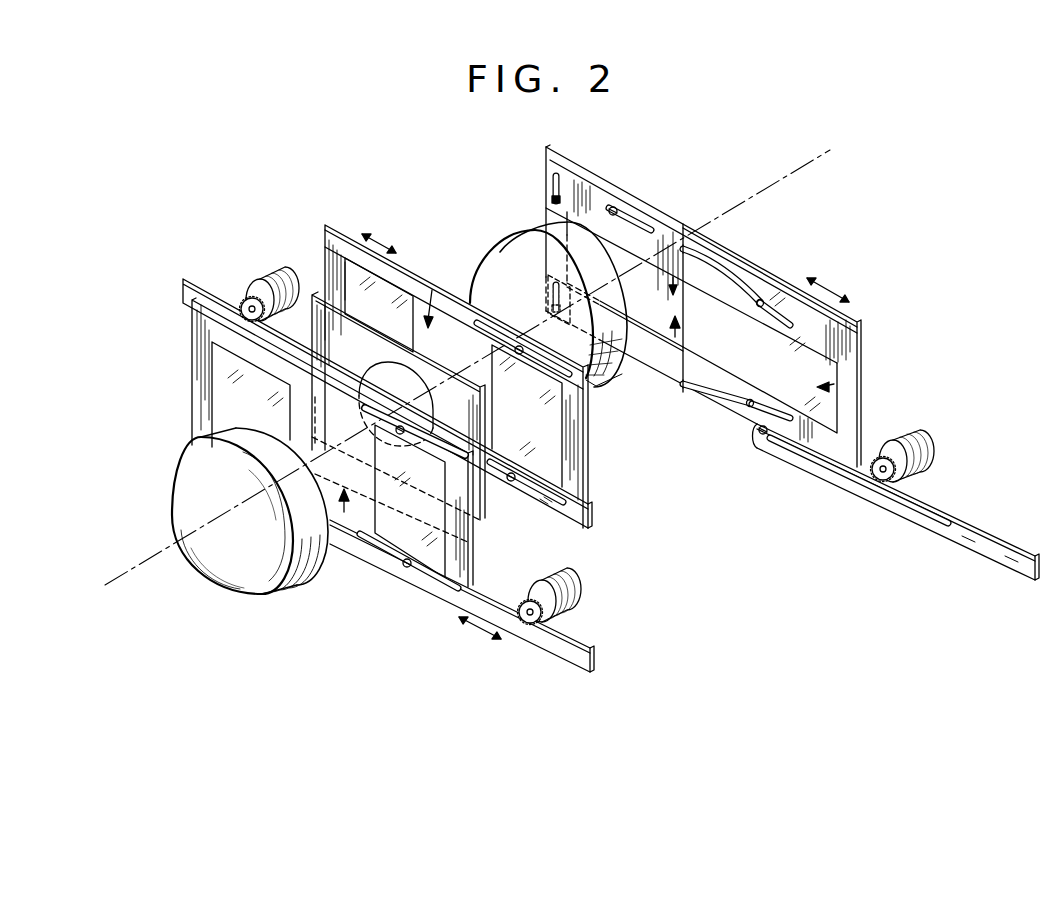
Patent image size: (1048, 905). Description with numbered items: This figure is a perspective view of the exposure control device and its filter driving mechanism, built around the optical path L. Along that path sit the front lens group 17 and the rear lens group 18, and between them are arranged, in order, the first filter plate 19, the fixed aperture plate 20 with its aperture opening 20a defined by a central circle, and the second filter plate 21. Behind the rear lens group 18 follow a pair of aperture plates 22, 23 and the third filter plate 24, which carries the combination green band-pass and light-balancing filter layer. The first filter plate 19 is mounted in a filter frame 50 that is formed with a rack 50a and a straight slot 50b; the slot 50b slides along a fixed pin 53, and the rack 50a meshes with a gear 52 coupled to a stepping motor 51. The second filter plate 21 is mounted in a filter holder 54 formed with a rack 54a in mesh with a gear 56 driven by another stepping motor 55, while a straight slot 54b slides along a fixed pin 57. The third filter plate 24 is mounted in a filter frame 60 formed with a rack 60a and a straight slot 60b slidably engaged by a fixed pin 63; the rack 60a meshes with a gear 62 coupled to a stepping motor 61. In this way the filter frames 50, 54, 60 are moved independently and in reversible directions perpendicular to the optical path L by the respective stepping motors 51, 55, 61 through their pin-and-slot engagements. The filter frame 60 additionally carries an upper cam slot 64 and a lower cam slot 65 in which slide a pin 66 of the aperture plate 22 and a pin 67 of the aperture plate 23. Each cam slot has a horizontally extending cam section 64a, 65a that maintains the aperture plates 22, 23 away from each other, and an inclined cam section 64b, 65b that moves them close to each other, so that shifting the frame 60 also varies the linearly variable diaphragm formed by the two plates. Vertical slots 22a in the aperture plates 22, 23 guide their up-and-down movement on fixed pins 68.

The front lens group 17 is at (232, 572).
The rear lens group 18 is at (498, 262).
The first filter plate 19 is at (344, 514).
The fixed aperture plate 20 is at (312, 294).
The aperture opening 20a is at (421, 408).
The second filter plate 21 is at (438, 290).
The aperture plate 22 is at (574, 168).
The vertical slot 22a is at (551, 178).
The aperture plate 23 is at (663, 362).
The third filter plate 24 is at (834, 384).
The filter frame 50 is at (193, 379).
The rack 50a is at (589, 646).
The straight slot 50b is at (440, 590).
The stepping motor 51 is at (567, 590).
The gear 52 is at (531, 625).
The fixed pin 53 is at (406, 568).
The filter holder 54 is at (590, 445).
The rack 54a is at (184, 278).
The straight slot 54b is at (545, 507).
The stepping motor 55 is at (270, 279).
The gear 56 is at (250, 298).
The fixed pin 57 is at (511, 482).
The filter frame 60 is at (850, 345).
The rack 60a is at (1015, 538).
The straight slot 60b is at (810, 455).
The stepping motor 61 is at (910, 440).
The gear 62 is at (882, 482).
The fixed pin 63 is at (761, 436).
The upper cam slot 64 is at (746, 281).
The horizontally extending cam section 64a is at (714, 256).
The inclined cam section 64b is at (768, 302).
The lower cam slot 65 is at (729, 408).
The horizontally extending cam section 65a is at (700, 396).
The inclined cam section 65b is at (750, 400).
The pin 66 is at (617, 207).
The pin 67 is at (613, 389).
The fixed pin 68 is at (551, 197).
The optical path L is at (150, 557).